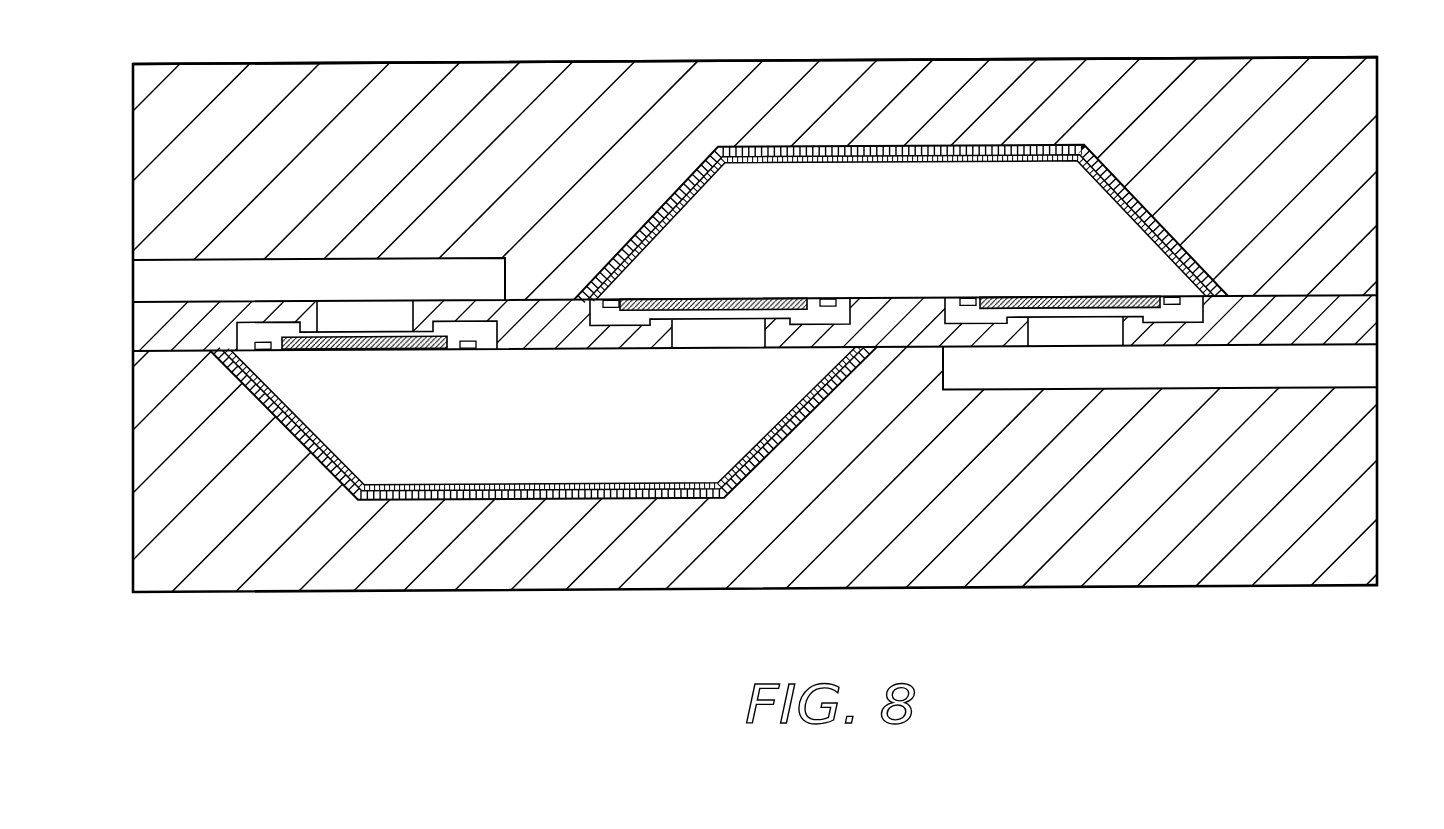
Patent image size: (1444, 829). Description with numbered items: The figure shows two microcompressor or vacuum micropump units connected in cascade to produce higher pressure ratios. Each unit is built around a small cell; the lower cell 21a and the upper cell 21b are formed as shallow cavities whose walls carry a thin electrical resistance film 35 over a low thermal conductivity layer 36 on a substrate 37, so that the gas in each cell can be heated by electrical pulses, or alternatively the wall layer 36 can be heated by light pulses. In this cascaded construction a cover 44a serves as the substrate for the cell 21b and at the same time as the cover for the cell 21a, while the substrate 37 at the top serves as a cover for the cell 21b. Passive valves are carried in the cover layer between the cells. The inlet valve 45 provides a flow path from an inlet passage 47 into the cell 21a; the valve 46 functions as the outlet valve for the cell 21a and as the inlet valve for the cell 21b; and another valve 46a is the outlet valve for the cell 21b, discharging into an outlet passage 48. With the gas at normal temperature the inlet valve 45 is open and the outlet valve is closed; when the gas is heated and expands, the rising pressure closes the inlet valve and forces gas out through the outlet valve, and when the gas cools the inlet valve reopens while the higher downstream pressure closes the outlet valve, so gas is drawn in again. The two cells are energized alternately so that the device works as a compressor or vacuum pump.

The cover 44a is at (670, 64).
The low thermal conductivity layer 36 is at (776, 151).
The substrate 37 is at (1100, 84).
The thin electrical resistance film 35 is at (818, 168).
The outlet valve 46 is at (714, 302).
The outlet valve 46a is at (1092, 280).
The inlet valve 45 is at (320, 352).
The cell 21a is at (543, 416).
The cell 21b is at (901, 229).
The inlet passage 47 is at (178, 266).
The outlet passage 48 is at (1325, 355).